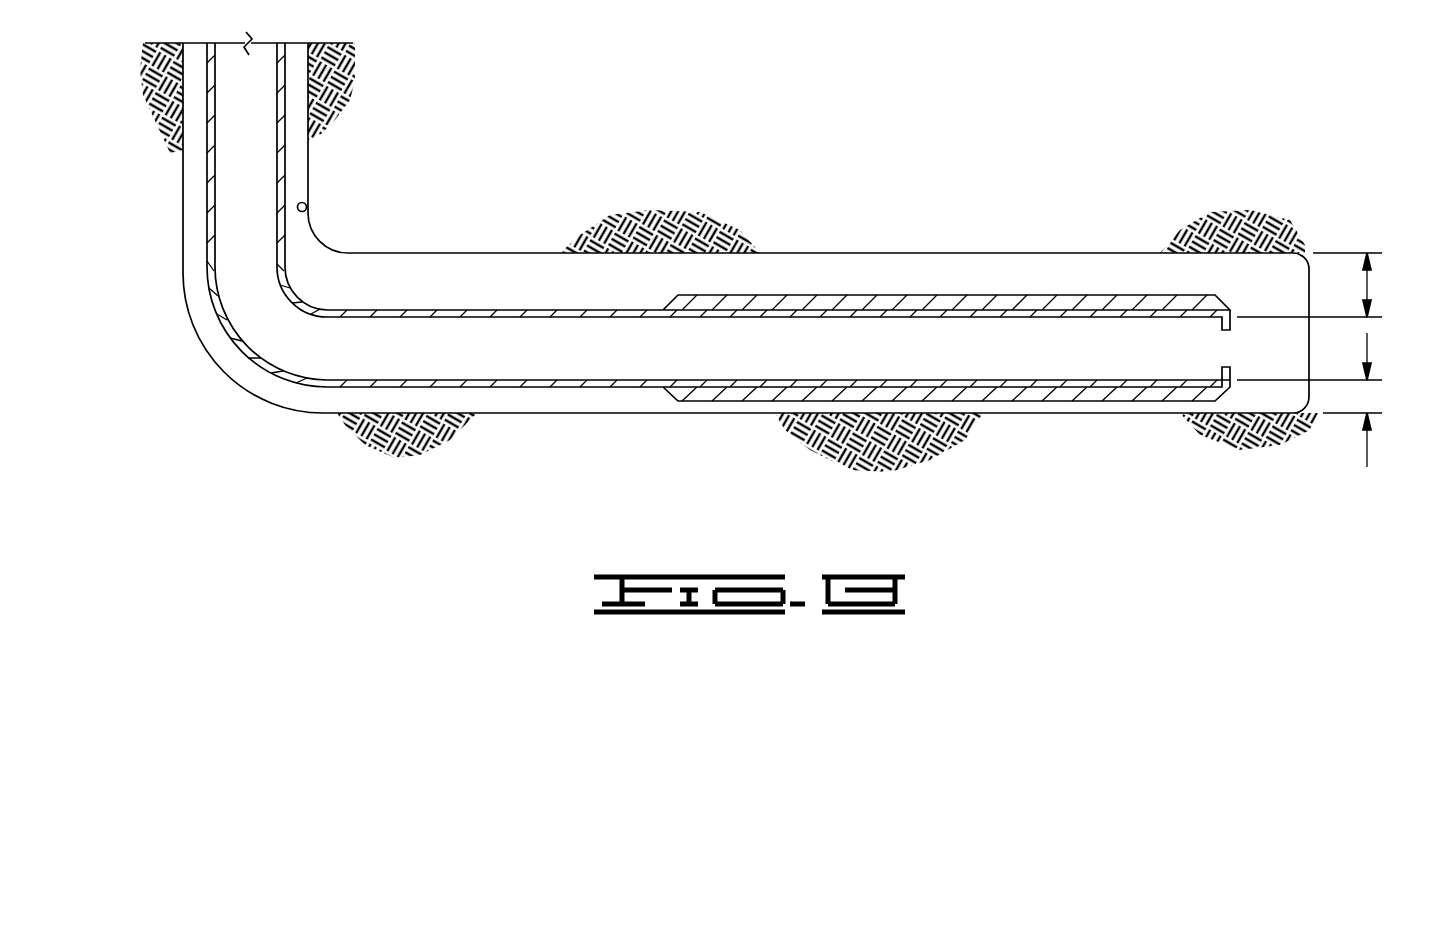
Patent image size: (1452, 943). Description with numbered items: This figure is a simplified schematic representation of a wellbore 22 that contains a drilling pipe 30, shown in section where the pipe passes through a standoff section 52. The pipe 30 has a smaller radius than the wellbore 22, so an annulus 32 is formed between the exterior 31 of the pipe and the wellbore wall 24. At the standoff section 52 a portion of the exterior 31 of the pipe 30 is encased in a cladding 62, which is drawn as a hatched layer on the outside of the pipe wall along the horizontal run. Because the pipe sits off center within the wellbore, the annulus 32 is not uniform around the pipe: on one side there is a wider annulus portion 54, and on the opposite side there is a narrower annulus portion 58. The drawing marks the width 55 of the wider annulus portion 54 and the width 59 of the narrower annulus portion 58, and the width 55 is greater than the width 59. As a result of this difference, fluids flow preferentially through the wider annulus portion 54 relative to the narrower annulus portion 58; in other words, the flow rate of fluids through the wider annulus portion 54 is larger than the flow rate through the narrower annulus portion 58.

The wellbore 22 is at (308, 167).
The wellbore wall 24 is at (306, 210).
The pipe 30 is at (205, 92).
The exterior of the pipe 31 is at (208, 280).
The annulus 32 is at (200, 193).
The standoff section 52 is at (1030, 490).
The wider annulus portion 54 is at (995, 280).
The width of wider annulus portion 55 is at (1367, 283).
The narrower annulus portion 58 is at (723, 402).
The width of narrower annulus portion 59 is at (1367, 400).
The cladding 62 is at (882, 295).